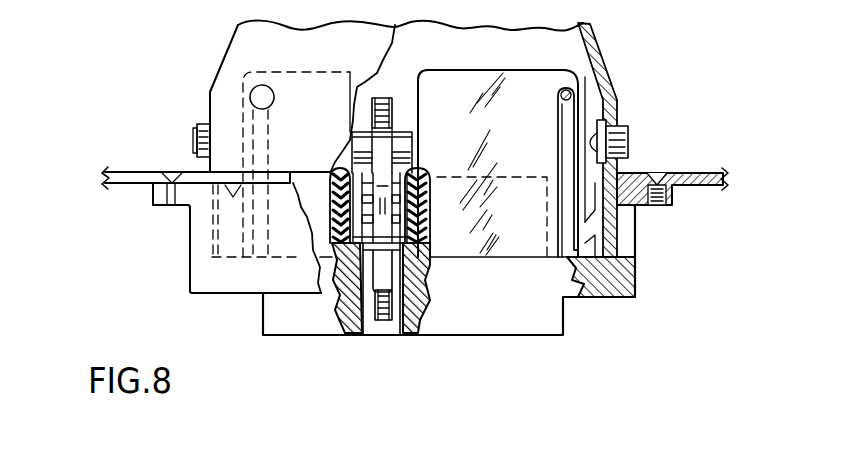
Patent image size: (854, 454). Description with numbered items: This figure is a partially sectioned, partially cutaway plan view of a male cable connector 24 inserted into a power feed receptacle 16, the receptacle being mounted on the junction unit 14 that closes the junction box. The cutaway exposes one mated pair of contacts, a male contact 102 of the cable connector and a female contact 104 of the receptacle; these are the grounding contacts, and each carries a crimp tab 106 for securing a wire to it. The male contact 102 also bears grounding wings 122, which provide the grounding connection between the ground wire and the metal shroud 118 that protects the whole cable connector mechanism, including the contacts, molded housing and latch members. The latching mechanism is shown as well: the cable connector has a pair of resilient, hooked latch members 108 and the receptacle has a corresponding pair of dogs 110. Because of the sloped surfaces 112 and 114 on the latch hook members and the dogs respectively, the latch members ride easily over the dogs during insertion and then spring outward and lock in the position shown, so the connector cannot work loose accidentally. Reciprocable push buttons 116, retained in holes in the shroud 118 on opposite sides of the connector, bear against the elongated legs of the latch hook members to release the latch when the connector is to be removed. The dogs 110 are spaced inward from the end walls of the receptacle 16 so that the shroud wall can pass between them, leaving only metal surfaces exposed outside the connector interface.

The junction unit 14 is at (690, 170).
The power feed receptacle 16 is at (638, 291).
The cable connector 24 is at (623, 80).
The male contact 102 is at (383, 138).
The female contact 104 is at (385, 277).
The crimp tab 106 is at (379, 96).
The resilient hooked latch member 108 is at (243, 222).
The dog 110 is at (250, 214).
The sloped surface 112 is at (240, 255).
The sloped surface 114 is at (233, 190).
The push button 116 is at (197, 147).
The metal shroud 118 is at (245, 48).
The grounding wing 122 is at (409, 152).